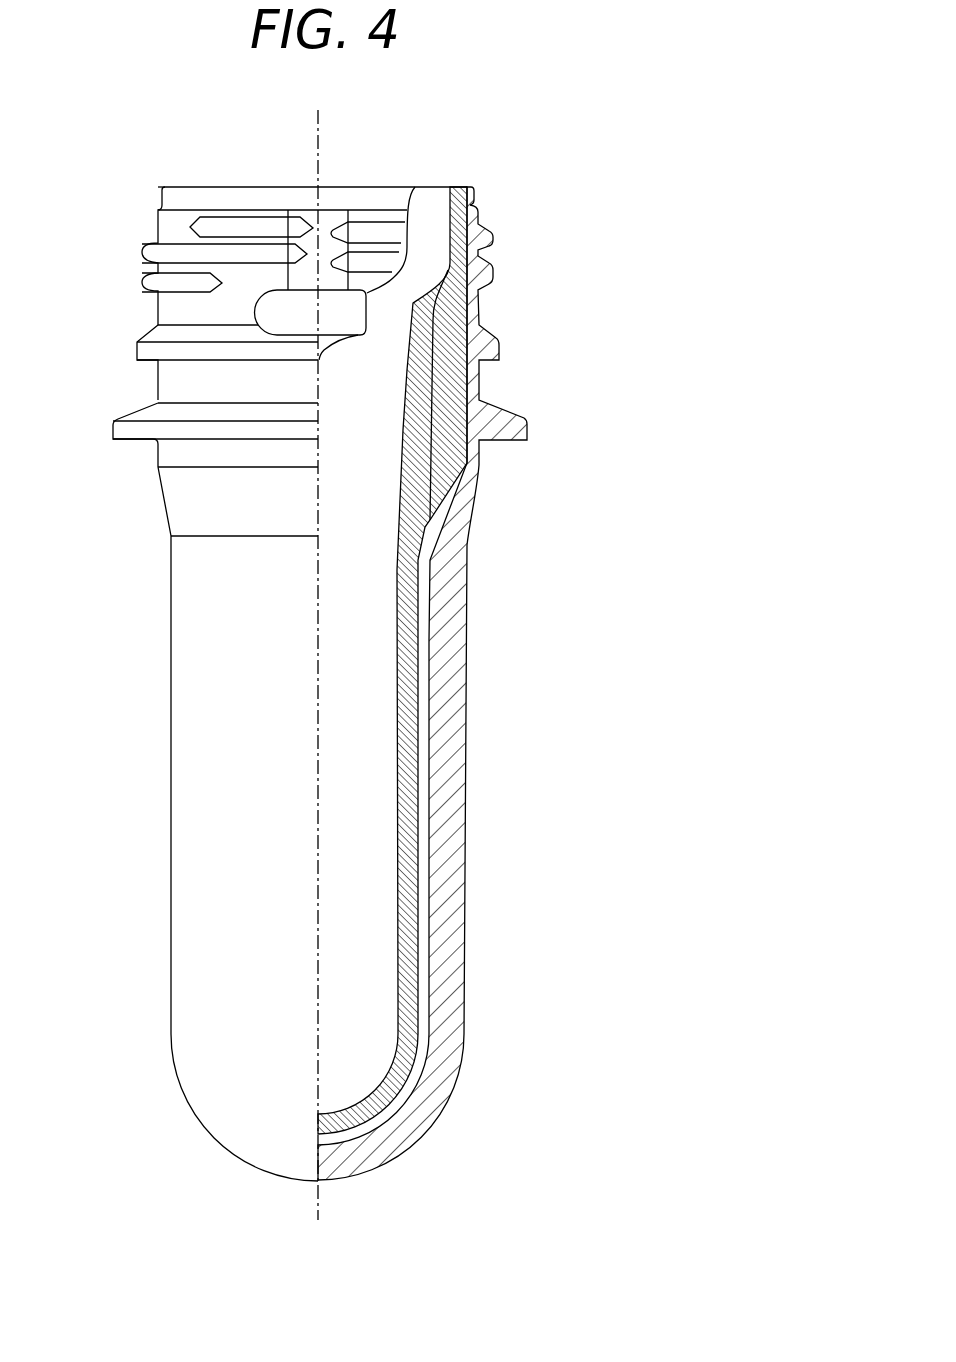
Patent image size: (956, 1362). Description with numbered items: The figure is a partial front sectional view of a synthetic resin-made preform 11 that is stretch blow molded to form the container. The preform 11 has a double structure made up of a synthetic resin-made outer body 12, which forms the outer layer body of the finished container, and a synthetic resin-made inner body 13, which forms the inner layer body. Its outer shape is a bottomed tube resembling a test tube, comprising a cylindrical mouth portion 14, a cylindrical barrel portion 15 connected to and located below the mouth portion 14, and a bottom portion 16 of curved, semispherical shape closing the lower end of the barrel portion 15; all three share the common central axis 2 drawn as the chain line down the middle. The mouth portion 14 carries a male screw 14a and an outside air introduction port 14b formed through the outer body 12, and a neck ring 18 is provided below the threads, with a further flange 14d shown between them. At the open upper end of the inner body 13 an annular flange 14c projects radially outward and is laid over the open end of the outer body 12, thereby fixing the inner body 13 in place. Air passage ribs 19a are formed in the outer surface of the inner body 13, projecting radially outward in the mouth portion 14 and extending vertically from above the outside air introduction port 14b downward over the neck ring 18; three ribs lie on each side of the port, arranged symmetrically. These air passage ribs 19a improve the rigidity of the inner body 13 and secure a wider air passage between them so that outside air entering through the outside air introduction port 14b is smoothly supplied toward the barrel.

The central axis 2 is at (324, 656).
The preform 11 is at (632, 203).
The outer body 12 is at (473, 695).
The inner body 13 is at (397, 735).
The mouth portion 14 is at (482, 289).
The male screw 14a is at (494, 237).
The outside air introduction port 14b is at (288, 316).
The annular flange 14c is at (476, 193).
The flange 14d is at (496, 352).
The barrel portion 15 is at (476, 773).
The bottom portion 16 is at (423, 1150).
The neck ring 18 is at (520, 433).
The air passage ribs 19a is at (462, 468).